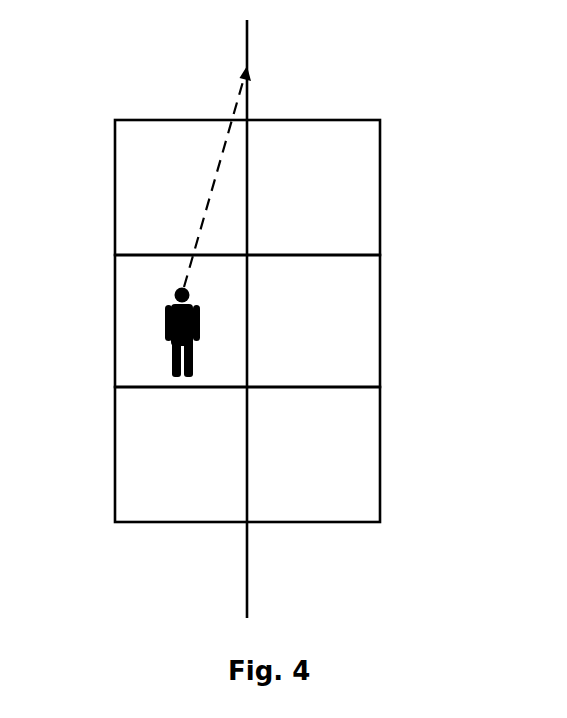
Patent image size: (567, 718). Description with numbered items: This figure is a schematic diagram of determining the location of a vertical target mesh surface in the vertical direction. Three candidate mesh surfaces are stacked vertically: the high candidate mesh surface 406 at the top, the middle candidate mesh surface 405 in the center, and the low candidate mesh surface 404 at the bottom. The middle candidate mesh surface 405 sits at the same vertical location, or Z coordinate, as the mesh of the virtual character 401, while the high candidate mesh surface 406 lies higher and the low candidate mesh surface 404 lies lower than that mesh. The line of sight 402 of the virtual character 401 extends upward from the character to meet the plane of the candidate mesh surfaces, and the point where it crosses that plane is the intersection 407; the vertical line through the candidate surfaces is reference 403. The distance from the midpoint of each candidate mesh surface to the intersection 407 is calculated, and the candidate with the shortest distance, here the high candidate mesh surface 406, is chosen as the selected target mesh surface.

The virtual character 401 is at (178, 289).
The line of sight 402 is at (218, 170).
The reference axis 403 is at (249, 587).
The low candidate mesh surface 404 is at (249, 457).
The middle candidate mesh surface 405 is at (249, 328).
The high candidate mesh surface 406 is at (249, 193).
The intersection 407 is at (258, 72).